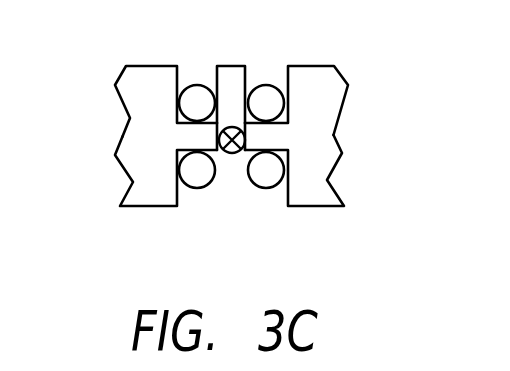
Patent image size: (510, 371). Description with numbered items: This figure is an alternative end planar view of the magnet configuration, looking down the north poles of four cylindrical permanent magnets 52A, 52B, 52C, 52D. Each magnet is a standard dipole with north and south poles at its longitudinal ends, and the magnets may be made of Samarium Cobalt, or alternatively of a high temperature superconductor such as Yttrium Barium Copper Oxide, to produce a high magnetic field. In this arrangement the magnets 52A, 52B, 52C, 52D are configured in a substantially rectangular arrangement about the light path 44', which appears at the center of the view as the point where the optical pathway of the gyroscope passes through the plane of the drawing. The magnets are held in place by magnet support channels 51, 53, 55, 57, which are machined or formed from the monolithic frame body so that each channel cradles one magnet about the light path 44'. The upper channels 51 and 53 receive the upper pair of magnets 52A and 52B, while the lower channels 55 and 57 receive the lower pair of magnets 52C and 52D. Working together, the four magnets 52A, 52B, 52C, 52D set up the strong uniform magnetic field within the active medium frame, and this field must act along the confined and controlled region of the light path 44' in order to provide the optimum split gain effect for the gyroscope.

The magnet support channel 51 is at (290, 80).
The magnet support channel 53 is at (175, 80).
The magnet support channel 55 is at (175, 193).
The magnet support channel 57 is at (290, 193).
The cylindrical magnet 52A is at (198, 85).
The cylindrical magnet 52B is at (265, 85).
The cylindrical magnet 52C is at (266, 188).
The cylindrical magnet 52D is at (198, 188).
The light path 44' is at (321, 117).